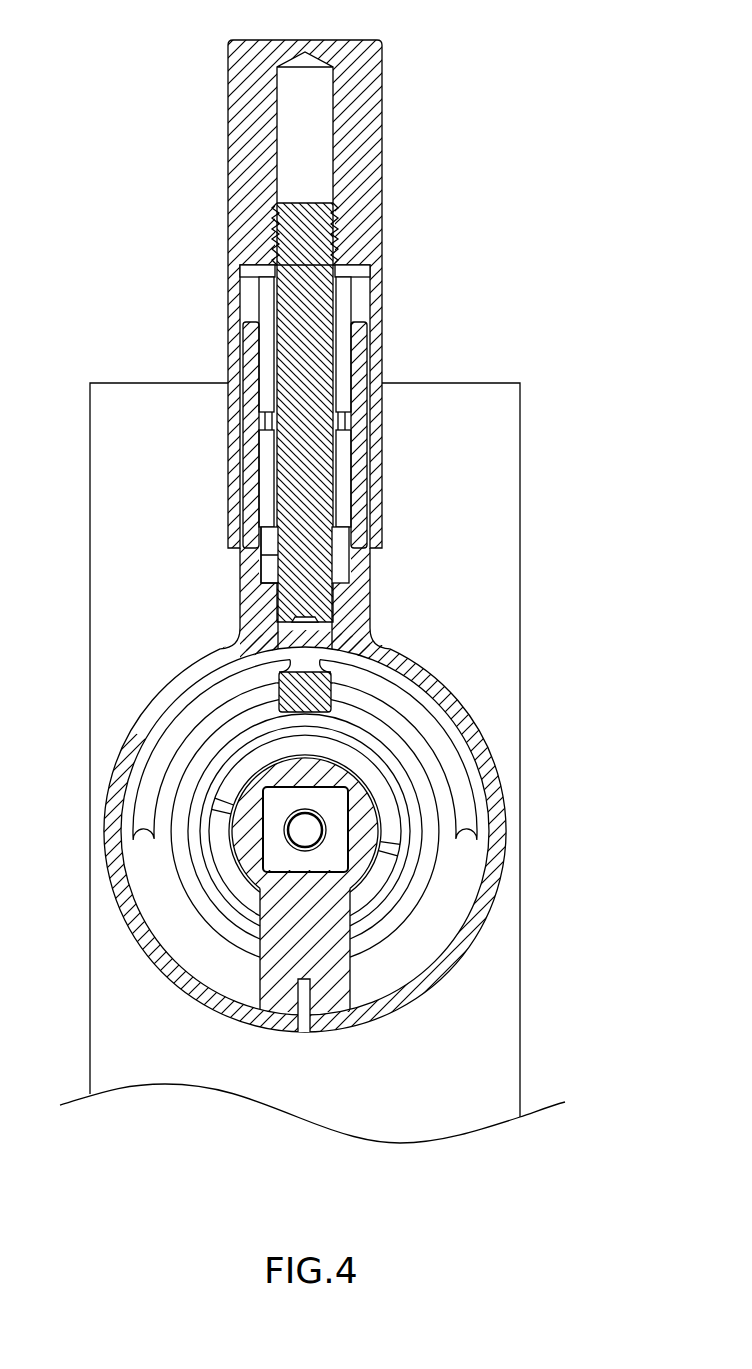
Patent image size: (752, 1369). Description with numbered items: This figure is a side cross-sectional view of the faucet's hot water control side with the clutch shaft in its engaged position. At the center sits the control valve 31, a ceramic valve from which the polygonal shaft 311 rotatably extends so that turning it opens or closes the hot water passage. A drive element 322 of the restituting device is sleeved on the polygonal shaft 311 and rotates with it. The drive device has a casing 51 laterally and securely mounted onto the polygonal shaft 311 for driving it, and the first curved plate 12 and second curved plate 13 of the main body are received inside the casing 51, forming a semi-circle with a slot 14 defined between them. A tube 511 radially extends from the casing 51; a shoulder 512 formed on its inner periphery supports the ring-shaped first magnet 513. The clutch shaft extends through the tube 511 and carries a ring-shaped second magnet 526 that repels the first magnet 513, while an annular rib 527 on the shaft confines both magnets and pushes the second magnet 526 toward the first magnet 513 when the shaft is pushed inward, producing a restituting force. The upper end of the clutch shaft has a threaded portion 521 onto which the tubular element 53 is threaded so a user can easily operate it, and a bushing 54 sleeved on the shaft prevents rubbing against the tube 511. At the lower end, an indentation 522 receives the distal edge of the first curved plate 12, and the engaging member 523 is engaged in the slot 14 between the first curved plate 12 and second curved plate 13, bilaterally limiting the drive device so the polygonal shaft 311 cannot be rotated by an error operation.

The tubular element 53 is at (382, 152).
The threaded portion 521 is at (336, 238).
The bushing 54 is at (345, 305).
The annular rib 527 is at (345, 418).
The second magnet 526 is at (345, 461).
The shoulder 512 is at (352, 572).
The first magnet 513 is at (262, 560).
The tube 511 is at (262, 598).
The indentation 522 is at (286, 633).
The slot 14 is at (300, 660).
The engaging member 523 is at (322, 693).
The second curved plate 13 is at (178, 727).
The first curved plate 12 is at (443, 737).
The control valve 31 is at (398, 822).
The casing 51 is at (513, 902).
The drive element 322 is at (243, 888).
The polygonal shaft 311 is at (328, 858).